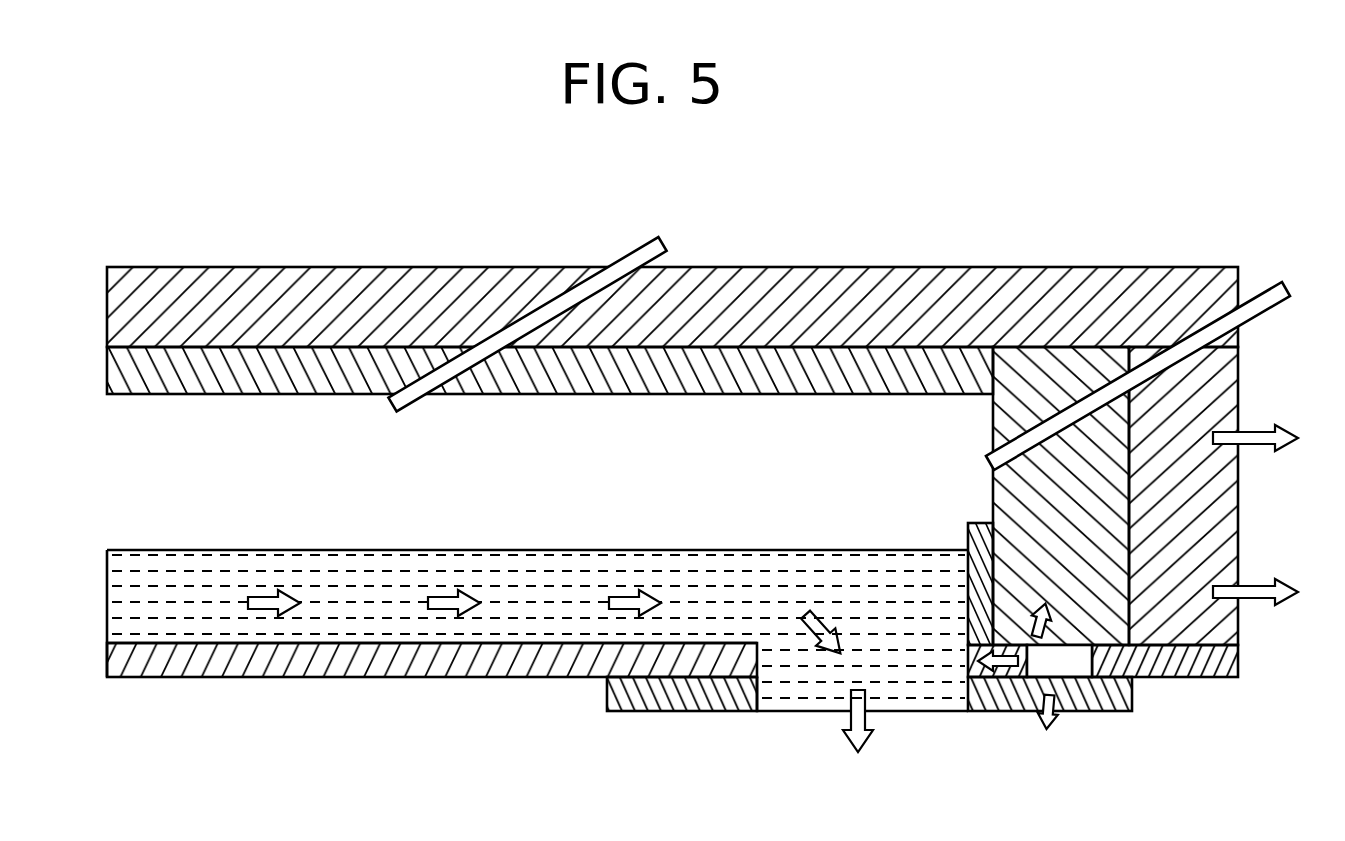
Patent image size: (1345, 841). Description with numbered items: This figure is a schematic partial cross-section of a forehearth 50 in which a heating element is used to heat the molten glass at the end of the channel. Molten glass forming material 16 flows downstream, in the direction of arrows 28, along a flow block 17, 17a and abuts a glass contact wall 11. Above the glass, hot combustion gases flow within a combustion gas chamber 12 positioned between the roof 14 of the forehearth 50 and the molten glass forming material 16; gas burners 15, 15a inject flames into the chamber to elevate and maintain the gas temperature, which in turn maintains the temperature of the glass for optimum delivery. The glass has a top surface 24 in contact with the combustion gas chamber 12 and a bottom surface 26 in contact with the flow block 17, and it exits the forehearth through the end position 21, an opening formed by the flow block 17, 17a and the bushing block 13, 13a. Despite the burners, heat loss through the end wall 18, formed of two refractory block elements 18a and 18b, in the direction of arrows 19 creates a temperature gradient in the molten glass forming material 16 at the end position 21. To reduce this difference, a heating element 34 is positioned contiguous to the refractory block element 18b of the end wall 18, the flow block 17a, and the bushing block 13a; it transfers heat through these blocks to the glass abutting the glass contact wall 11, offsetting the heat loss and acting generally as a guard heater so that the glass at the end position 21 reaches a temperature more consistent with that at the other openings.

The forehearth 50 is at (960, 210).
The combustion gas chamber 12 is at (120, 467).
The roof 14 is at (312, 278).
The gas burner 15 is at (632, 252).
The gas burner 15a is at (1273, 290).
The end wall 18 is at (1114, 496).
The refractory block element 18a is at (1235, 485).
The refractory block element 18b is at (993, 423).
The glass contact wall 11 is at (968, 530).
The flow block 17 is at (350, 665).
The flow block 17a is at (1000, 668).
The heating element 34 is at (1060, 662).
The bushing block 13 is at (680, 695).
The bushing block 13a is at (1015, 700).
The end position 21 is at (800, 718).
The top surface 24 is at (295, 548).
The bottom surface 26 is at (182, 640).
The molten glass forming material 16 is at (117, 592).
The arrows 28 is at (449, 590).
The arrows 19 is at (1258, 432).